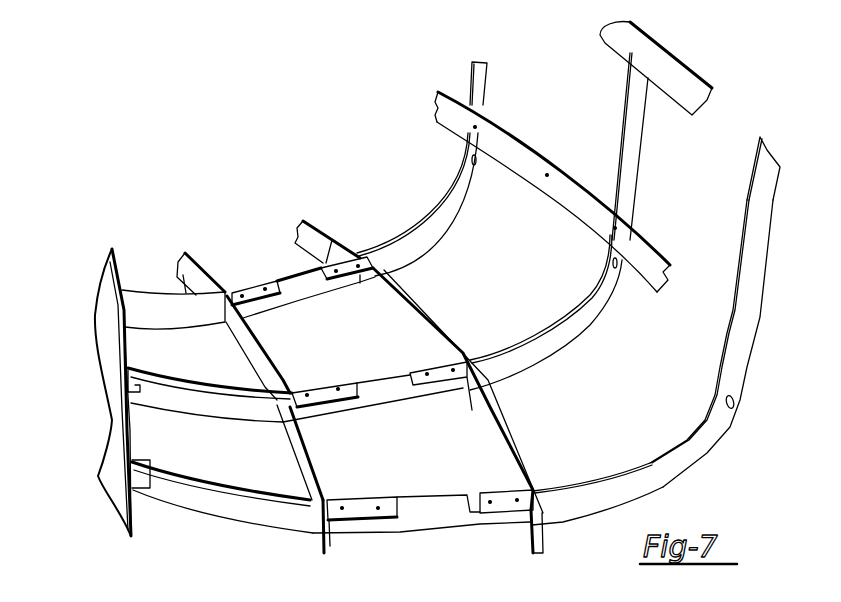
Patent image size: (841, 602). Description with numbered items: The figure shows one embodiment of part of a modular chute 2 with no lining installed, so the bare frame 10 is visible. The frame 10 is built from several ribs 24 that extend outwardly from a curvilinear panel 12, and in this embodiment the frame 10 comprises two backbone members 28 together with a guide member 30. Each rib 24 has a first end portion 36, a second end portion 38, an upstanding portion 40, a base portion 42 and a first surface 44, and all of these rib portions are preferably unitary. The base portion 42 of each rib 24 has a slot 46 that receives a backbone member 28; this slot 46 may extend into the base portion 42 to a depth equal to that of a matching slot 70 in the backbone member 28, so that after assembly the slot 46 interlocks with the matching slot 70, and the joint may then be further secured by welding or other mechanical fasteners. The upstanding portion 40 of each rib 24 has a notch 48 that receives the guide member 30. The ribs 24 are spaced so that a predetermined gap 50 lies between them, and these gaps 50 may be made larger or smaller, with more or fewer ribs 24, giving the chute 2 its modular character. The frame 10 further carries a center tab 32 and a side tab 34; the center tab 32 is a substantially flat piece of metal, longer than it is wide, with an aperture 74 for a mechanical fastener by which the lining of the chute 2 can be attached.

The modular chute 2 is at (750, 51).
The frame 10 is at (773, 197).
The curvilinear panel 12 is at (103, 337).
The rib 24 is at (387, 243).
The backbone member 28 is at (413, 325).
The guide member 30 is at (562, 188).
The center tab 32 is at (252, 287).
The side tab 34 is at (147, 488).
The first end portion 36 is at (167, 294).
The second end portion 38 is at (768, 157).
The upstanding portion 40 is at (745, 355).
The base portion 42 is at (423, 518).
The first surface 44 is at (586, 513).
The slot 46 is at (322, 507).
The notch 48 is at (727, 352).
The gap 50 is at (381, 444).
The matching slot 70 is at (283, 412).
The aperture 74 is at (427, 372).